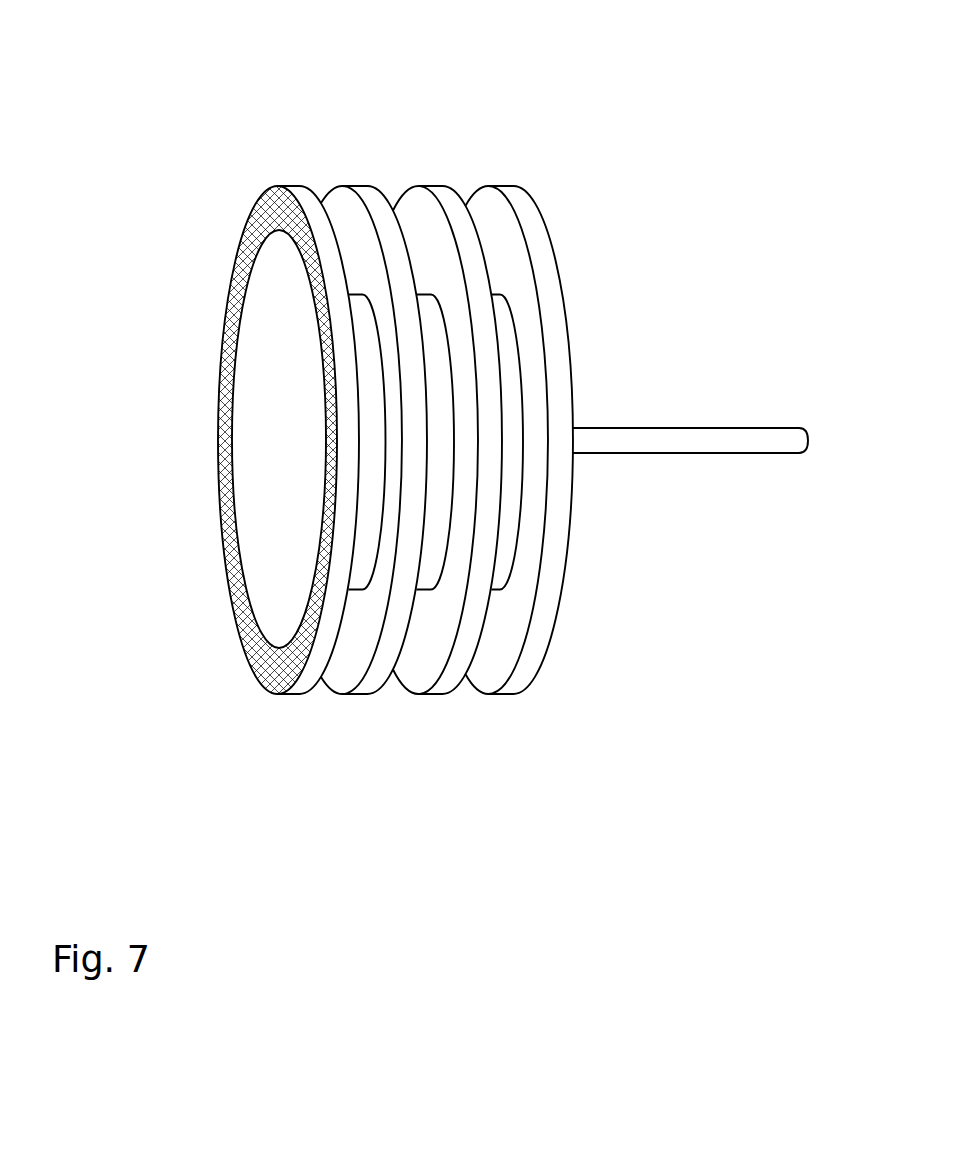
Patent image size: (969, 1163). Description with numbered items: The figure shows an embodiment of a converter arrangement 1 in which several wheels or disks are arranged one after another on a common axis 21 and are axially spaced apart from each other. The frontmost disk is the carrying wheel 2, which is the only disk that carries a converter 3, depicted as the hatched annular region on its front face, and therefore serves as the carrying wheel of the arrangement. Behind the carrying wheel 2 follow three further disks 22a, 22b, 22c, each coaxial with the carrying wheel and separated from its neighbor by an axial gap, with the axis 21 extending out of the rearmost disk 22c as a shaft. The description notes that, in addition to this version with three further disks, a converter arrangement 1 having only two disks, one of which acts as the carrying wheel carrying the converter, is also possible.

The converter arrangement 1 is at (730, 215).
The carrying wheel 2 is at (308, 187).
The converter 3 is at (262, 199).
The axis 21 is at (700, 427).
The disk 22a is at (380, 190).
The disk 22b is at (448, 202).
The disk 22c is at (520, 203).